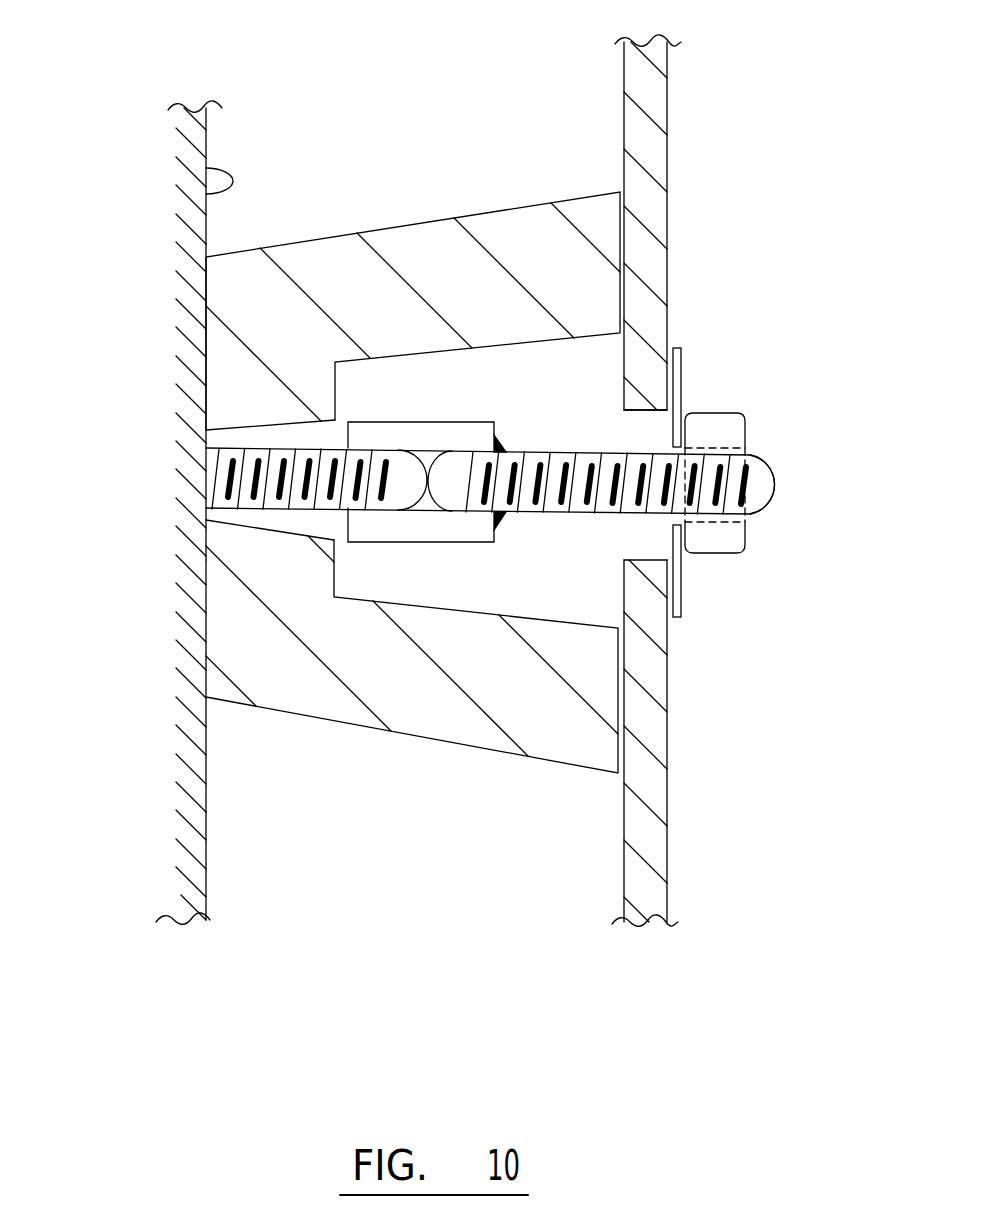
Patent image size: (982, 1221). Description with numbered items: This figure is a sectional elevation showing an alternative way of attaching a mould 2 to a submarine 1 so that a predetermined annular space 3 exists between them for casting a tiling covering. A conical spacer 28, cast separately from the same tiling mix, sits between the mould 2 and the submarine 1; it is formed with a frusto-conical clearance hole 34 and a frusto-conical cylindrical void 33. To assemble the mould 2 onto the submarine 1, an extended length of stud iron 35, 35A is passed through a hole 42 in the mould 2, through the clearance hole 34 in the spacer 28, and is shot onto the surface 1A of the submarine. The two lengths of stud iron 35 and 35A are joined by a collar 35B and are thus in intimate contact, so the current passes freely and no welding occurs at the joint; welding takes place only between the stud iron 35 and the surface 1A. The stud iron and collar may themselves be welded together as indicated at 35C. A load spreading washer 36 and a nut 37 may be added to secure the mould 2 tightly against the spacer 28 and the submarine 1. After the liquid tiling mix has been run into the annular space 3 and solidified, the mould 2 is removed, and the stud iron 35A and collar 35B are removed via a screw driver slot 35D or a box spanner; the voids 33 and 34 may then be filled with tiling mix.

The submarine 1 is at (195, 351).
The surface 1A is at (206, 195).
The mould 2 is at (650, 203).
The annular space 3 is at (308, 780).
The conical spacer 28 is at (431, 255).
The frusto-conical cylindrical void 33 is at (370, 573).
The frusto-conical clearance hole 34 is at (232, 513).
The stud iron 35 is at (206, 478).
The stud iron 35A is at (630, 486).
The collar 35B is at (432, 527).
The weld 35C is at (505, 517).
The screw driver slot 35D is at (768, 478).
The load spreading washer 36 is at (717, 348).
The nut 37 is at (725, 430).
The hole 42 is at (650, 538).